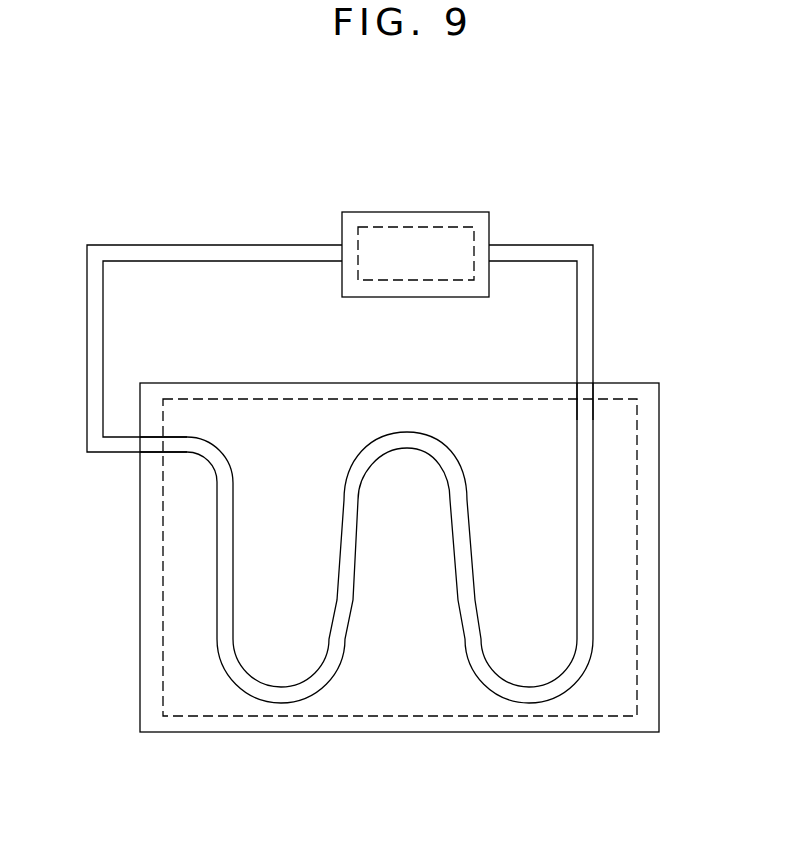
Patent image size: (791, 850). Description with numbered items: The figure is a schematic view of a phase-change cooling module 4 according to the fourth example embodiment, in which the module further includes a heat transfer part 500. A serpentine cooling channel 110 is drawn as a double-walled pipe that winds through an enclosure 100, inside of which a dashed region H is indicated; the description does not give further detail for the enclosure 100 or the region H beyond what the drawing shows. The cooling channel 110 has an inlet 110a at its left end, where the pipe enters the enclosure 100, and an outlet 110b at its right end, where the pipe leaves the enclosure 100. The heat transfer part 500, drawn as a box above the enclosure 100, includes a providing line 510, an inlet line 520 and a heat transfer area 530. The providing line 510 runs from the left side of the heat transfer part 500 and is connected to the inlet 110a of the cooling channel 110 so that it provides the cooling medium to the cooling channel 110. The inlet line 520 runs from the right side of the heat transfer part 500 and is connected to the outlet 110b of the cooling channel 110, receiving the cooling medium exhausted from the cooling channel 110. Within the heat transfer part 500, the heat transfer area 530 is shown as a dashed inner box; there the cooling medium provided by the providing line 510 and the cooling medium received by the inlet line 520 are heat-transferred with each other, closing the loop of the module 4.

The phase-change cooling module 4 is at (238, 149).
The housing 100 is at (572, 732).
The accommodation space H is at (472, 716).
The cooling channel 110 is at (402, 447).
The inlet 110a is at (137, 446).
The outlet 110b is at (583, 384).
The heat transfer part 500 is at (466, 212).
The providing line 510 is at (215, 251).
The inlet line 520 is at (557, 244).
The heat transfer area 530 is at (407, 227).